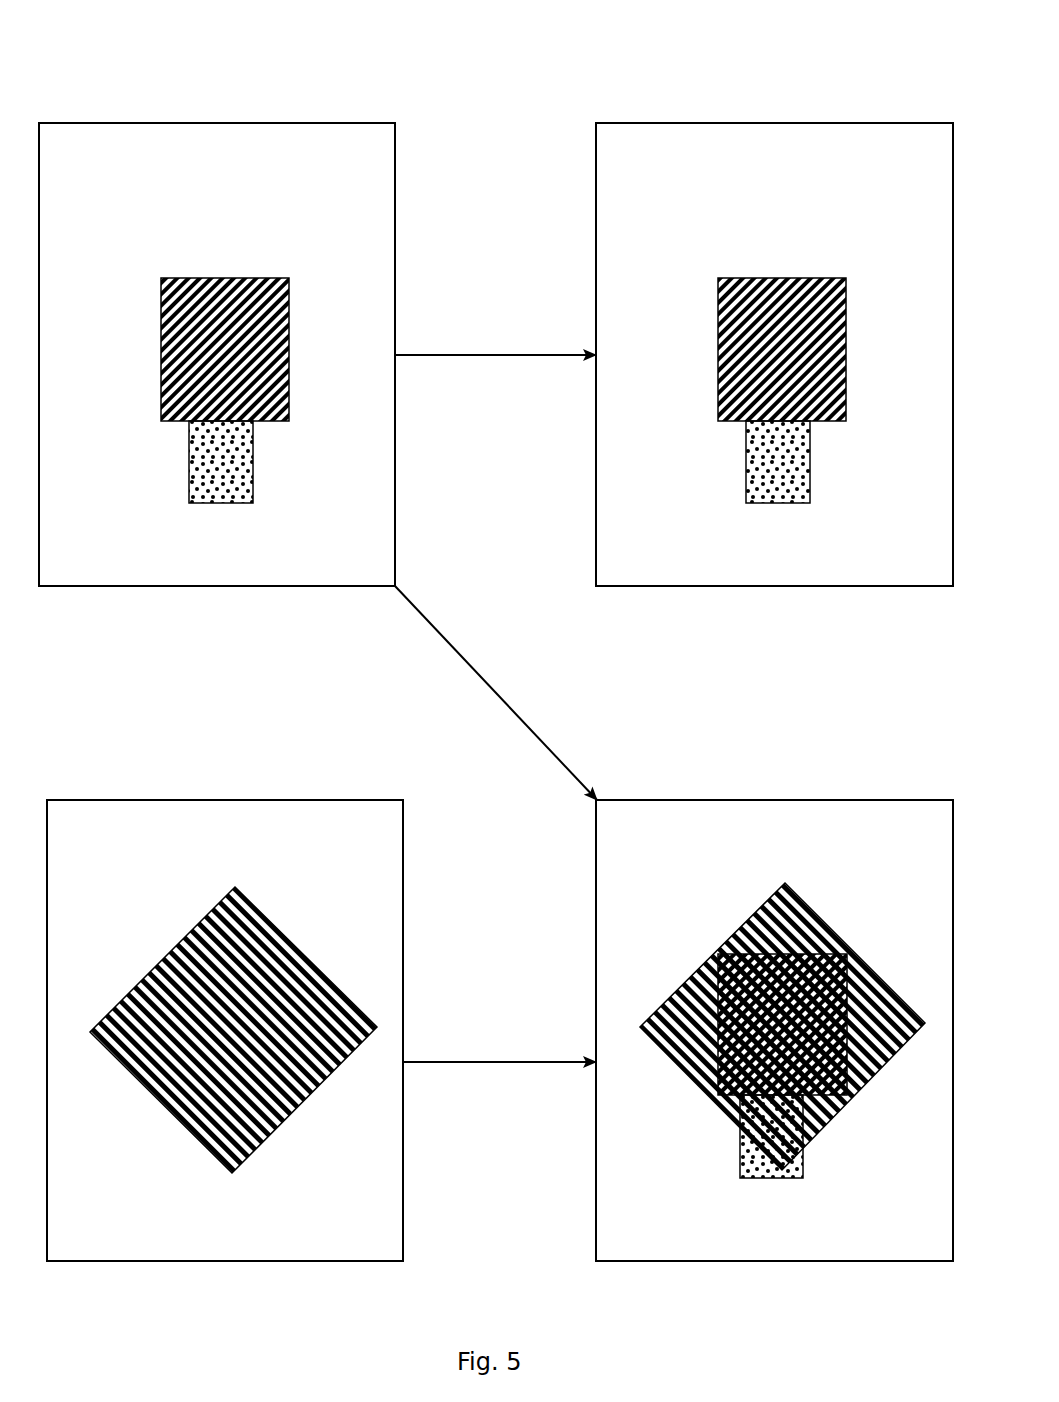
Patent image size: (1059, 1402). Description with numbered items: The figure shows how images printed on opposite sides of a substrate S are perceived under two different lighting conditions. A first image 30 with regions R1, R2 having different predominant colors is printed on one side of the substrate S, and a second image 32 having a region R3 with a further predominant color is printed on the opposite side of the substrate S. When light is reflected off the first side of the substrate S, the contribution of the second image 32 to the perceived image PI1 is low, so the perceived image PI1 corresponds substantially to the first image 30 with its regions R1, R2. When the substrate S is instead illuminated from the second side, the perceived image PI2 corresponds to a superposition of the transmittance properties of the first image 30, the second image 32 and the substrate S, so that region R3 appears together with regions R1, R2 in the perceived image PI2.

The first image 30 is at (217, 301).
The second image 32 is at (222, 971).
The substrate S is at (371, 122).
The region R1 is at (180, 277).
The region R2 is at (189, 472).
The region R3 is at (177, 940).
The perceived image PI1 is at (740, 110).
The perceived image PI2 is at (727, 787).